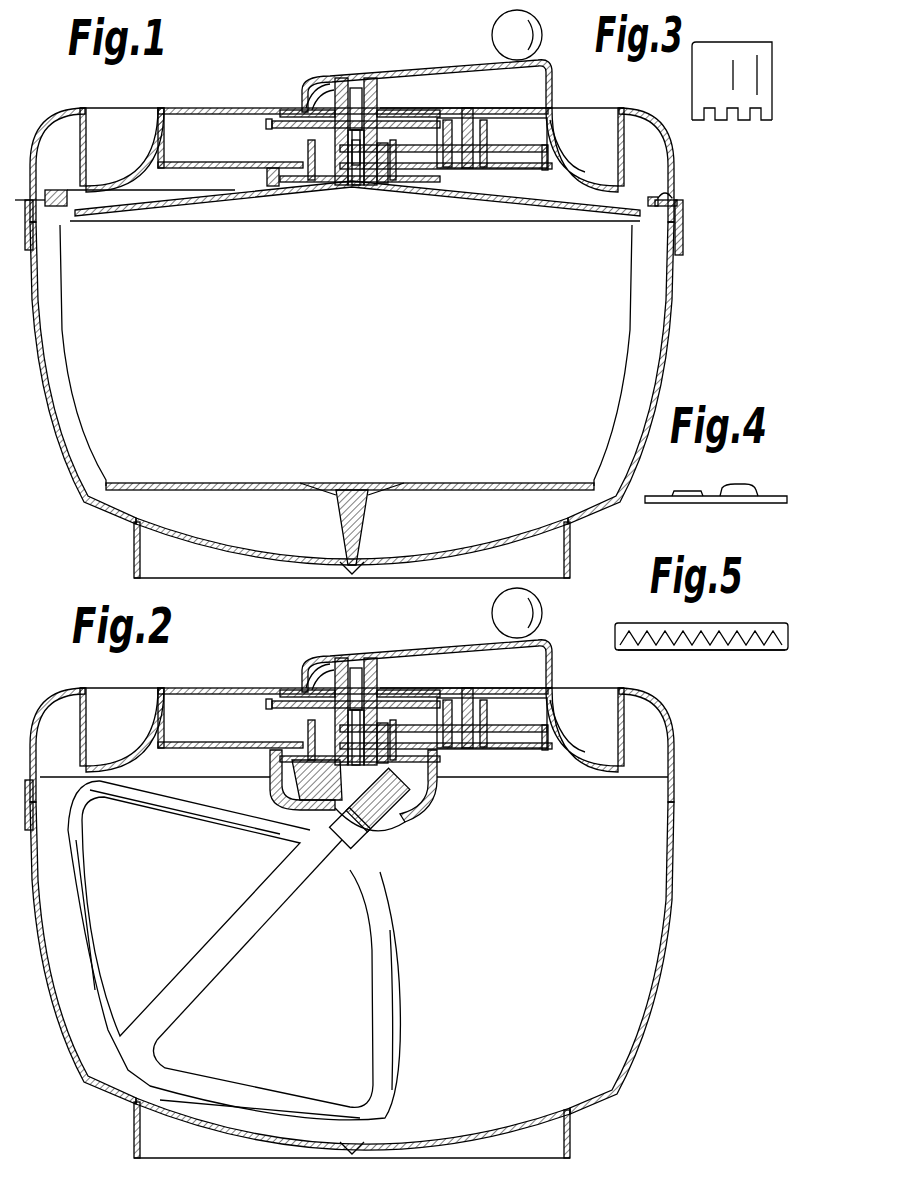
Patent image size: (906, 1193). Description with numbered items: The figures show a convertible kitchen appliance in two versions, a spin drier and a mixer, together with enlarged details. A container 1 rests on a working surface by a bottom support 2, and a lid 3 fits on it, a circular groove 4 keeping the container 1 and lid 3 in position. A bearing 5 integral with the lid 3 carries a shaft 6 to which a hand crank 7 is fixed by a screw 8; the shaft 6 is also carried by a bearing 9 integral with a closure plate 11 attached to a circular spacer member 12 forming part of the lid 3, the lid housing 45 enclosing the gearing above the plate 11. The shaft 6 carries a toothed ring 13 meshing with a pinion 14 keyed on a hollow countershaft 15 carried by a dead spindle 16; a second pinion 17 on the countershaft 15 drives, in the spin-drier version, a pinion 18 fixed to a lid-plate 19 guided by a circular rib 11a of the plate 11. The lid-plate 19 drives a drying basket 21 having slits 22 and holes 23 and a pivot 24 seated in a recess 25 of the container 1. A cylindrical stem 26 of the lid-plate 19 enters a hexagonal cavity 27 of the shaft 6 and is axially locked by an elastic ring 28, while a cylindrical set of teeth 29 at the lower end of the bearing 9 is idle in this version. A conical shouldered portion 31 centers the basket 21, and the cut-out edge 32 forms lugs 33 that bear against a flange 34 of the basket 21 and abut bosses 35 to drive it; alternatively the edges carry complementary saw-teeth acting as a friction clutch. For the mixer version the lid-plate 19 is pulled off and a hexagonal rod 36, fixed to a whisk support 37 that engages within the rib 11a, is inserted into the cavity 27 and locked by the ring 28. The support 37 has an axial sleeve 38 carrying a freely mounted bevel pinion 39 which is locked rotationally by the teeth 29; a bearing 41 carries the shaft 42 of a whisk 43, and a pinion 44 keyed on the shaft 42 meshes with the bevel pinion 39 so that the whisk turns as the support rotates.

In FIG. 1, the container 1 is at (78, 503).
In FIG. 2, the container 1 is at (82, 1078).
In FIG. 1, the bottom support 2 is at (134, 560).
In FIG. 2, the bottom support 2 is at (335, 1135).
In FIG. 1, the lid 3 is at (53, 112).
In FIG. 2, the lid 3 is at (349, 743).
In FIG. 1, the circular groove 4 is at (115, 125).
In FIG. 2, the circular groove 4 is at (122, 716).
In FIG. 1, the bearing 5 is at (318, 95).
In FIG. 2, the bearing 5 is at (311, 667).
In FIG. 1, the shaft 6 is at (368, 80).
In FIG. 2, the shaft 6 is at (366, 688).
In FIG. 1, the hand crank 7 is at (455, 64).
In FIG. 2, the hand crank 7 is at (427, 640).
In FIG. 1, the screw 8 is at (356, 88).
In FIG. 2, the screw 8 is at (363, 689).
In FIG. 1, the bearing 9 is at (330, 182).
In FIG. 2, the bearing 9 is at (360, 726).
In FIG. 3, the bearing 9 is at (763, 76).
In FIG. 1, the closure plate 11 is at (215, 166).
In FIG. 2, the closure plate 11 is at (171, 760).
In FIG. 1, the circular rib 11a is at (262, 188).
In FIG. 2, the circular rib 11a is at (552, 794).
In FIG. 1, the circular spacer member 12 is at (166, 140).
In FIG. 2, the circular spacer member 12 is at (180, 718).
In FIG. 1, the toothed ring 13 is at (272, 128).
In FIG. 2, the toothed ring 13 is at (337, 717).
In FIG. 1, the pinion 14 is at (488, 138).
In FIG. 2, the pinion 14 is at (492, 723).
In FIG. 1, the countershaft 15 is at (445, 170).
In FIG. 2, the countershaft 15 is at (446, 751).
In FIG. 1, the dead spindle 16 is at (468, 115).
In FIG. 2, the dead spindle 16 is at (482, 702).
In FIG. 1, the second pinion 17 is at (552, 157).
In FIG. 2, the second pinion 17 is at (585, 730).
In FIG. 1, the pinion 18 is at (383, 183).
In FIG. 2, the pinion 18 is at (382, 743).
In FIG. 1, the lid-plate 19 is at (568, 222).
In FIG. 1, the drying basket 21 is at (608, 403).
In FIG. 1, the slits 22 is at (630, 325).
In FIG. 1, the holes 23 is at (470, 485).
In FIG. 1, the pivot 24 is at (358, 530).
In FIG. 1, the recess 25 is at (350, 574).
In FIG. 2, the recess 25 is at (379, 1132).
In FIG. 1, the cylindrical stem 26 is at (352, 186).
In FIG. 1, the hexagonal cavity 27 is at (358, 185).
In FIG. 2, the hexagonal cavity 27 is at (392, 742).
In FIG. 1, the elastic ring 28 is at (463, 94).
In FIG. 2, the elastic ring 28 is at (463, 674).
In FIG. 3, the cylindrical set of teeth 29 is at (741, 122).
In FIG. 1, the conical shouldered portion 31 is at (625, 222).
In FIG. 1, the edge 32 is at (650, 198).
In FIG. 5, the edge 32 is at (740, 630).
In FIG. 4, the lugs 33 is at (695, 491).
In FIG. 1, the flange 34 is at (660, 212).
In FIG. 4, the flange 34 is at (652, 504).
In FIG. 5, the flange 34 is at (745, 648).
In FIG. 1, the bosses 35 is at (674, 196).
In FIG. 4, the bosses 35 is at (738, 490).
In FIG. 2, the hexagonal rod 36 is at (385, 828).
In FIG. 2, the whisk support 37 is at (455, 822).
In FIG. 2, the axial sleeve 38 is at (282, 790).
In FIG. 2, the bevel pinion 39 is at (315, 780).
In FIG. 2, the bearing 41 is at (355, 845).
In FIG. 2, the shaft 42 is at (372, 832).
In FIG. 2, the whisk 43 is at (388, 980).
In FIG. 2, the pinion 44 is at (440, 800).
In FIG. 1, the housing 45 is at (192, 108).
In FIG. 2, the housing 45 is at (353, 671).